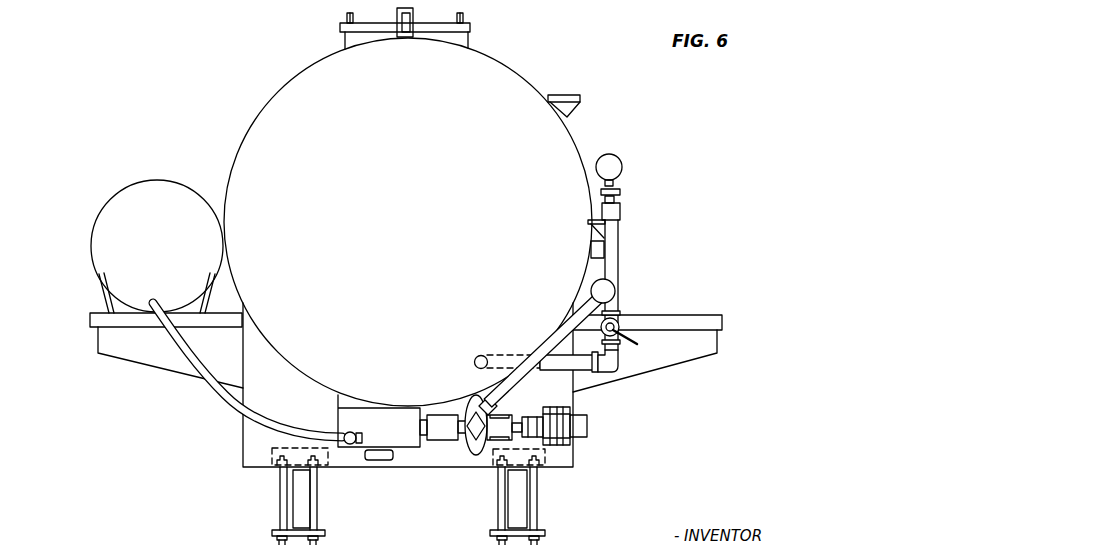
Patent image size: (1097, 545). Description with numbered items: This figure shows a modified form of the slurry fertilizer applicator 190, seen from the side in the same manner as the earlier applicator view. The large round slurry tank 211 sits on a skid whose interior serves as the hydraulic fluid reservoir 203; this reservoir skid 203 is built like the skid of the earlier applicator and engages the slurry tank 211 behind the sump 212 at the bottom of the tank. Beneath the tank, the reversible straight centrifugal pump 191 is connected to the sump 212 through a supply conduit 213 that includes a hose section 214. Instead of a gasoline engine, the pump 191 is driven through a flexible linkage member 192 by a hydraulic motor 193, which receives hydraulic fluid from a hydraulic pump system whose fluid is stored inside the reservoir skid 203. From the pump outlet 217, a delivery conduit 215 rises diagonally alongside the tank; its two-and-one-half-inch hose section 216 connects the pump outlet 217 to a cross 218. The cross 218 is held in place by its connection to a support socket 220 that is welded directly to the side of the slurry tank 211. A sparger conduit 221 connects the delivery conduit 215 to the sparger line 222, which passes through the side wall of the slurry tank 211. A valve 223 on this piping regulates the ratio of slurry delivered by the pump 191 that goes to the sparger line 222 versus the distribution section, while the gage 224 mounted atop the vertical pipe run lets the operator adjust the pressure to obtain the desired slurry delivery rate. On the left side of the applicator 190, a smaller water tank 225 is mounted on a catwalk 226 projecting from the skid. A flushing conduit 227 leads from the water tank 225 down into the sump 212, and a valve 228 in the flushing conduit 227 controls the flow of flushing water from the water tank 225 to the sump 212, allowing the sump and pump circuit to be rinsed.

The applicator 190 is at (641, 113).
The centrifugal pump 191 is at (474, 452).
The flexible linkage member 192 is at (529, 417).
The hydraulic motor 193 is at (565, 444).
The fluid reservoir skid 203 is at (272, 404).
The slurry tank 211 is at (396, 221).
The sump 212 is at (385, 436).
The supply conduit 213 is at (433, 449).
The hose section 214 is at (446, 427).
The delivery conduit 215 is at (541, 332).
The hose section 216 is at (488, 396).
The pump outlet 217 is at (466, 418).
The cross 218 is at (615, 280).
The support socket 220 is at (606, 241).
The sparger conduit 221 is at (625, 360).
The sparger line 222 is at (486, 357).
The valve 223 is at (621, 319).
The gage 224 is at (621, 193).
The water tank 225 is at (143, 256).
The catwalk 226 is at (90, 322).
The flushing conduit 227 is at (208, 400).
The valve 228 is at (351, 431).